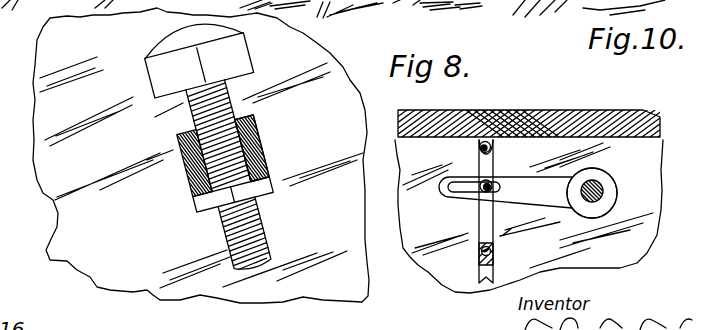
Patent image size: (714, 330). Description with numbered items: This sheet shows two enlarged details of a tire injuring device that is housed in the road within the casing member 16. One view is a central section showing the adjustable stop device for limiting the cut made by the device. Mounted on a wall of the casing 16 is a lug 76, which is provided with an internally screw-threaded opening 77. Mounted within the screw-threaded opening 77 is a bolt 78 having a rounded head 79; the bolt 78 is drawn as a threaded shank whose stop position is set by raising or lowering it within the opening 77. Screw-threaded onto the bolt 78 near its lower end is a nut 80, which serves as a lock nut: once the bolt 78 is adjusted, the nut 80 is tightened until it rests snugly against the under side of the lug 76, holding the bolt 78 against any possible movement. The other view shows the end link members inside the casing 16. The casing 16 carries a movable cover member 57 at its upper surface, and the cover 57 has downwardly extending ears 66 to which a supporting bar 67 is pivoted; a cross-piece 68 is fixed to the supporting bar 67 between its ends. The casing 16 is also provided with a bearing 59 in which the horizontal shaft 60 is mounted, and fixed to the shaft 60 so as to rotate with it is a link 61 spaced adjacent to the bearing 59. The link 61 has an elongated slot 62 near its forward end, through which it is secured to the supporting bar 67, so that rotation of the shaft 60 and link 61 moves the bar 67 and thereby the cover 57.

In FIG. 10, the casing member 16 is at (201, 155).
In FIG. 8, the casing member 16 is at (553, 118).
In FIG. 8, the movable cover member 57 is at (436, 139).
In FIG. 8, the bearings 59 is at (604, 177).
In FIG. 8, the horizontal shaft 60 is at (606, 197).
In FIG. 8, the links 61 is at (572, 188).
In FIG. 8, the elongated slots 62 is at (491, 182).
In FIG. 8, the downwardly extending ears 66 is at (473, 143).
In FIG. 8, the supporting bars 67 is at (485, 217).
In FIG. 8, the cross-piece 68 is at (478, 263).
In FIG. 10, the lugs 76 is at (258, 128).
In FIG. 10, the internally screw-threaded opening 77 is at (268, 153).
In FIG. 10, the bolt 78 is at (288, 244).
In FIG. 10, the rounded head 79 is at (167, 48).
In FIG. 10, the nut 80 is at (263, 190).